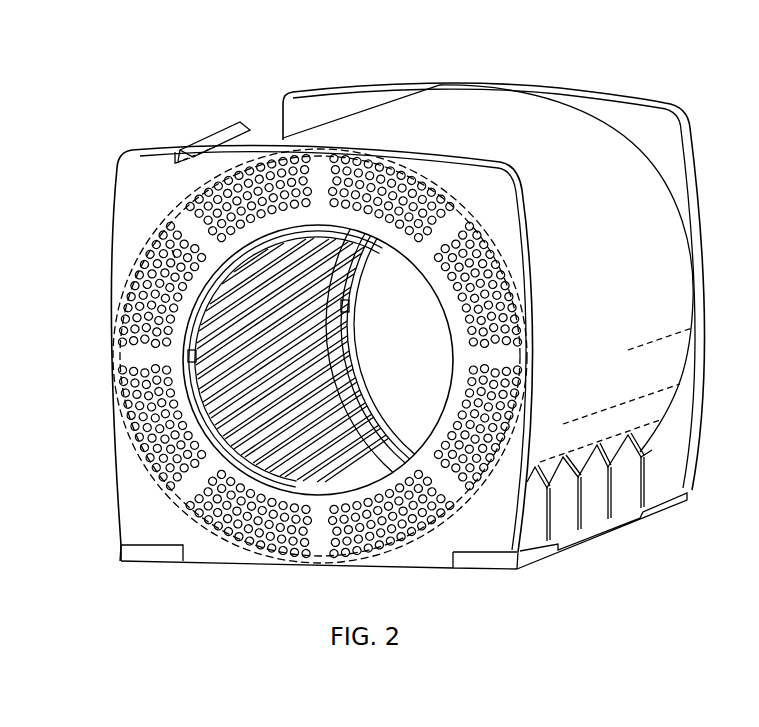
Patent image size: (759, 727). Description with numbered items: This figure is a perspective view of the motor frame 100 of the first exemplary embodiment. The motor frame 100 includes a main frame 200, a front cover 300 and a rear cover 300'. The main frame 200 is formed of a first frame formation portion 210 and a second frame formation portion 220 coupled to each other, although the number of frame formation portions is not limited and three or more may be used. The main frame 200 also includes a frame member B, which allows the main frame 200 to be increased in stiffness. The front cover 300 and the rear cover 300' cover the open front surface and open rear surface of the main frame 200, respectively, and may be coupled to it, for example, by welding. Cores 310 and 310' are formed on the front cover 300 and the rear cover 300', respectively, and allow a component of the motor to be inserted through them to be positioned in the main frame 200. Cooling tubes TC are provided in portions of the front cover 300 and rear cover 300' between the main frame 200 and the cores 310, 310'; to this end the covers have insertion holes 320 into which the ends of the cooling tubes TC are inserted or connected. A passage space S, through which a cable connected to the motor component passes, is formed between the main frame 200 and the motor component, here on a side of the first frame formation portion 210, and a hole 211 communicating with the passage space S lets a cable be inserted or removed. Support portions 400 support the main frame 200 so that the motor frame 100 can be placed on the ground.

The motor frame 100 is at (264, 55).
The main frame 200 is at (560, 110).
The first frame formation portion 210 is at (160, 213).
The hole 211 is at (214, 124).
The second frame formation portion 220 is at (277, 562).
The front cover 300 is at (289, 350).
The rear cover 300' is at (511, 275).
The core 310 is at (447, 273).
The core 310' is at (524, 281).
The insertion hole 320 is at (180, 153).
The support portion 400 is at (590, 553).
The frame member B is at (315, 437).
The passage space S is at (172, 250).
The cooling tube TC is at (187, 357).